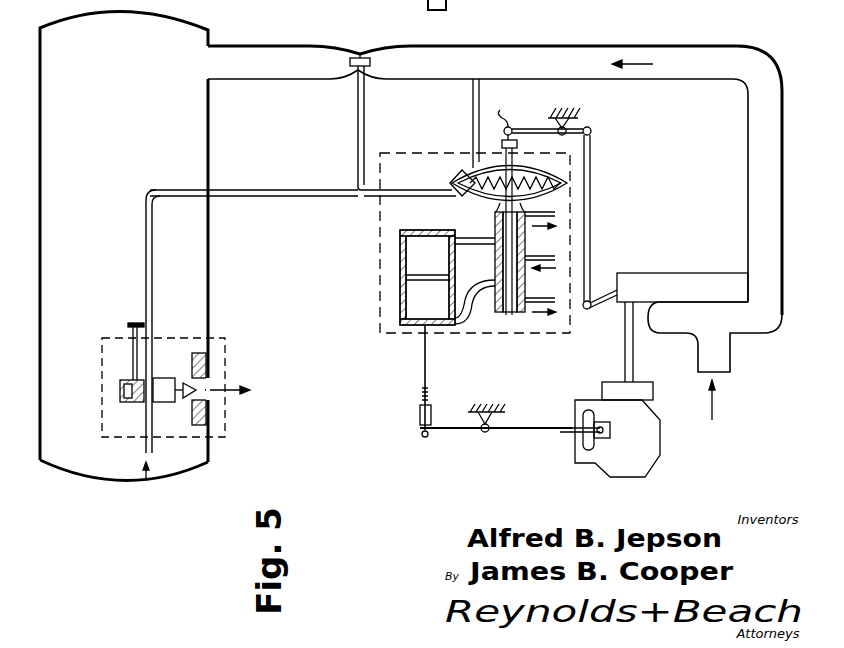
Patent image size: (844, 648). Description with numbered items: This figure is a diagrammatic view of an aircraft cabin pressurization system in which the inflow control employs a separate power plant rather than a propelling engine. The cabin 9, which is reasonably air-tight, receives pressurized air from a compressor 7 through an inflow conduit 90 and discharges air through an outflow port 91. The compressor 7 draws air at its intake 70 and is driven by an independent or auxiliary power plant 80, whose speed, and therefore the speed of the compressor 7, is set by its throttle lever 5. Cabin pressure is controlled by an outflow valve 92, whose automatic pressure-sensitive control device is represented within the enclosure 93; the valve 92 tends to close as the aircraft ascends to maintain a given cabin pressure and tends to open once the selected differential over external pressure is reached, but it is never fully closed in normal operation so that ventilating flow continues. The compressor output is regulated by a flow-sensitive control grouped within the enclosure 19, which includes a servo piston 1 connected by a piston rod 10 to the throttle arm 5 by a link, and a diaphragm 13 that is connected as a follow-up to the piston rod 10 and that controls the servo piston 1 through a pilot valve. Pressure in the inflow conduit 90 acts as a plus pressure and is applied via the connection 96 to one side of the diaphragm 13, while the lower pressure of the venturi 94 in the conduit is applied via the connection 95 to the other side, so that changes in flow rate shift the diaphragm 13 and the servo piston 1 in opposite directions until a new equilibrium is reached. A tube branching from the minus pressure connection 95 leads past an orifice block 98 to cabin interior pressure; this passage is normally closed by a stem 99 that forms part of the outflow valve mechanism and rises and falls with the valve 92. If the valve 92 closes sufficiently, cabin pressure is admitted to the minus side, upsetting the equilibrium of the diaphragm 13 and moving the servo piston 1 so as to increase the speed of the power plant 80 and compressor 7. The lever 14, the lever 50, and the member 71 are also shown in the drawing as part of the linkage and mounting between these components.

The servo piston 1 is at (410, 277).
The throttle lever 5 is at (575, 434).
The compressor 7 is at (720, 320).
The cabin 9 is at (124, 478).
The piston rod 10 is at (425, 372).
The diaphragm 13 is at (458, 172).
The pivoted arm 14 is at (508, 118).
The enclosure 19 is at (380, 260).
The lever 50 is at (455, 428).
The compressor intake 70 is at (706, 358).
The plate 71 is at (666, 290).
The auxiliary power plant 80 is at (650, 440).
The inflow conduit 90 is at (577, 60).
The outflow port 91 is at (206, 400).
The outflow valve 92 is at (185, 385).
The enclosure 93 is at (102, 382).
The venturi 94 is at (360, 58).
The minus pressure connection 95 is at (358, 132).
The plus pressure connection 96 is at (473, 140).
The orifice block 98 is at (126, 380).
The stem 99 is at (158, 378).